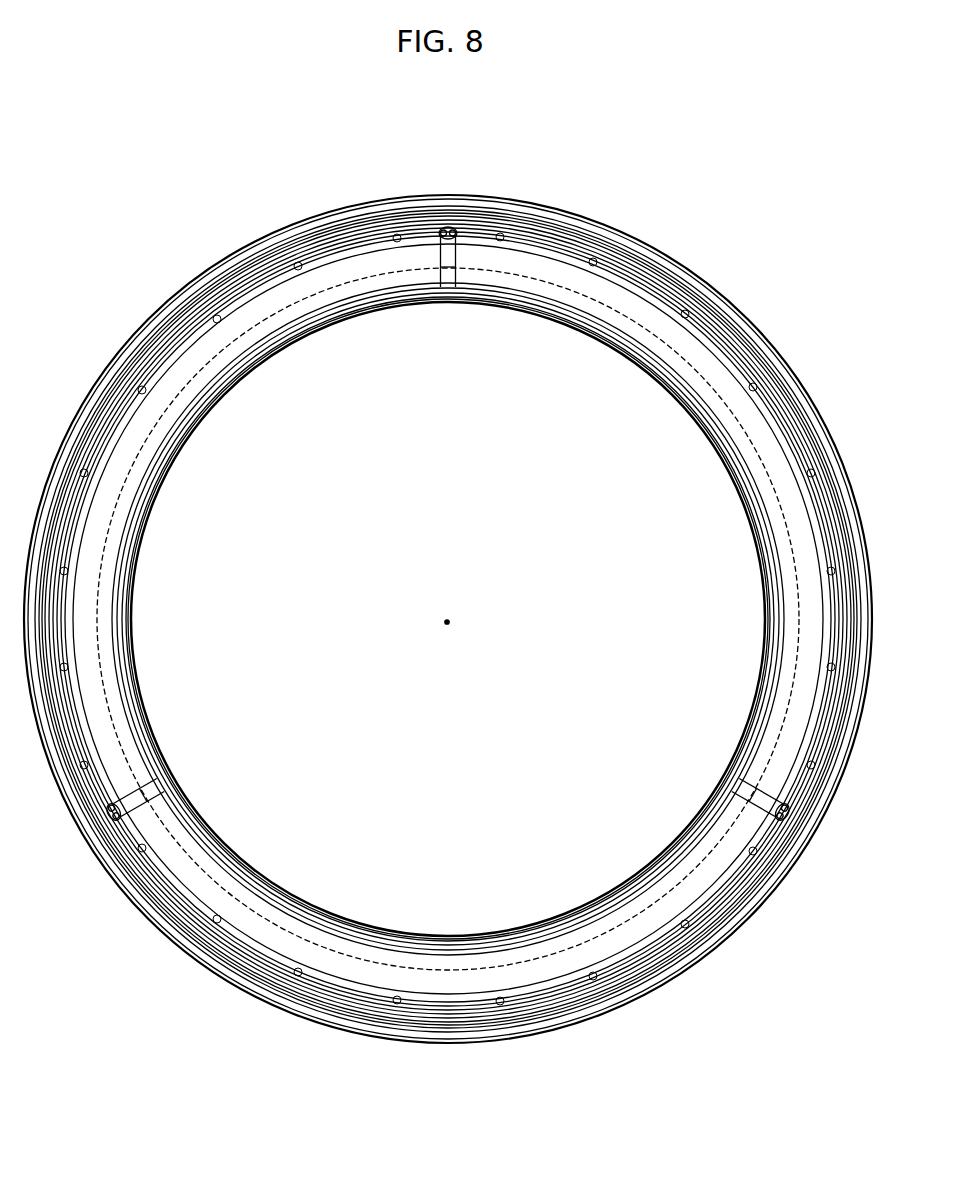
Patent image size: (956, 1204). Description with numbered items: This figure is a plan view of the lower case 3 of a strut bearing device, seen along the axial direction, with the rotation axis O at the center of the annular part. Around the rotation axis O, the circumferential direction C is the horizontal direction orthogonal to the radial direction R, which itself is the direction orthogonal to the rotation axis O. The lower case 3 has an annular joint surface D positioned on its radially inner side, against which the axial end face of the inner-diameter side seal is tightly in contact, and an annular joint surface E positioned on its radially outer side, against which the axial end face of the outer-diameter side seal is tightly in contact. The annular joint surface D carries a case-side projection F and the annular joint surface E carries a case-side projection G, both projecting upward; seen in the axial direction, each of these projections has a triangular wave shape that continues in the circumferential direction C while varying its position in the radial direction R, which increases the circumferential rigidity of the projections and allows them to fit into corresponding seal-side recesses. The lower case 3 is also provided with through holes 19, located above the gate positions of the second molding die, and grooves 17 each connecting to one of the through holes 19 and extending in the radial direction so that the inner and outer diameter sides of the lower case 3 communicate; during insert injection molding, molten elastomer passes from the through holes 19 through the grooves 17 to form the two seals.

The lower case 3 is at (252, 210).
The grooves 17 is at (445, 258).
The through holes 19 is at (457, 231).
The circumferential direction C is at (575, 162).
The radial direction R is at (447, 352).
The annular joint surface E is at (623, 266).
The case-side projection G is at (720, 332).
The annular joint surface D is at (625, 340).
The case-side projection F is at (735, 462).
The rotation axis O is at (450, 620).